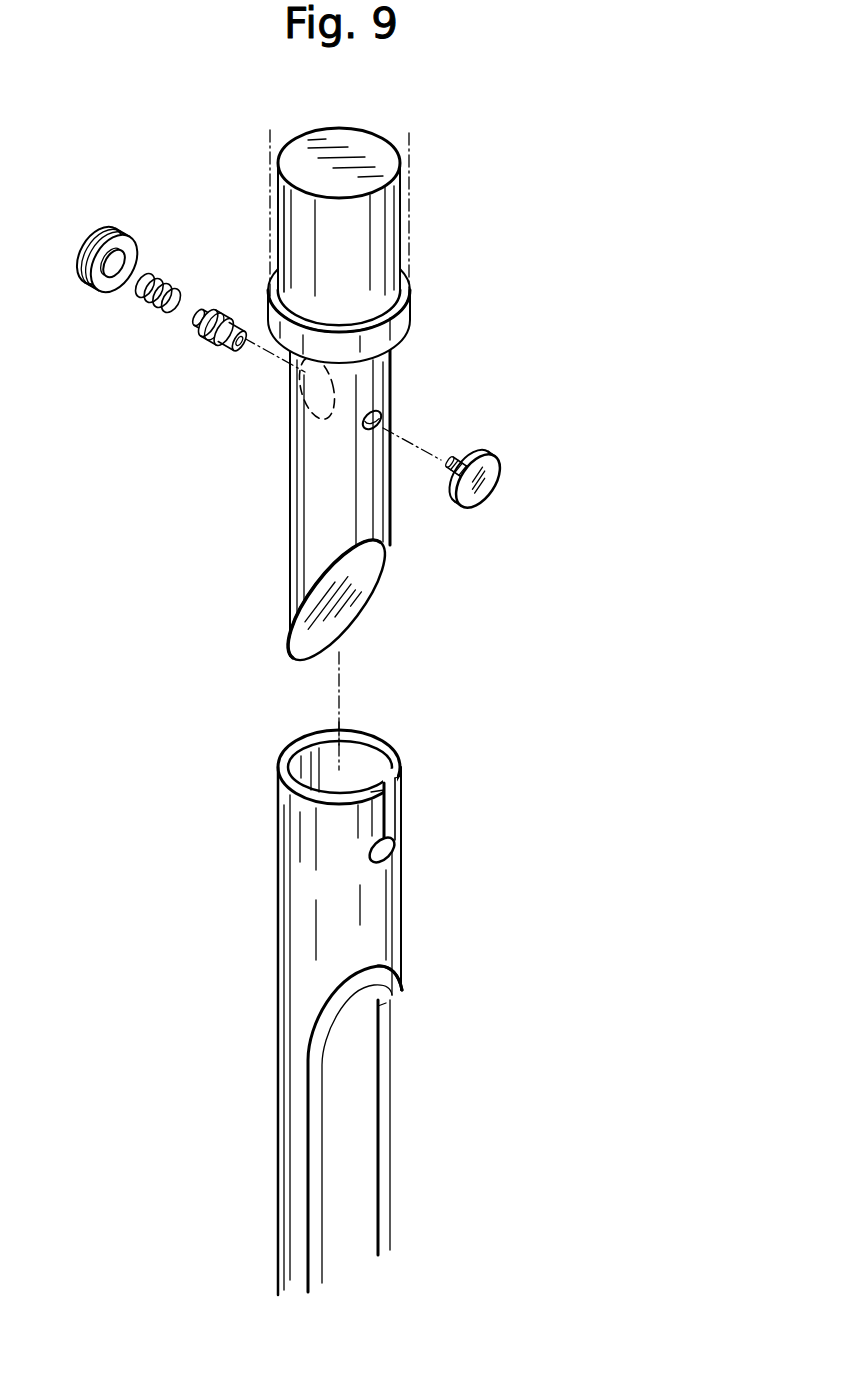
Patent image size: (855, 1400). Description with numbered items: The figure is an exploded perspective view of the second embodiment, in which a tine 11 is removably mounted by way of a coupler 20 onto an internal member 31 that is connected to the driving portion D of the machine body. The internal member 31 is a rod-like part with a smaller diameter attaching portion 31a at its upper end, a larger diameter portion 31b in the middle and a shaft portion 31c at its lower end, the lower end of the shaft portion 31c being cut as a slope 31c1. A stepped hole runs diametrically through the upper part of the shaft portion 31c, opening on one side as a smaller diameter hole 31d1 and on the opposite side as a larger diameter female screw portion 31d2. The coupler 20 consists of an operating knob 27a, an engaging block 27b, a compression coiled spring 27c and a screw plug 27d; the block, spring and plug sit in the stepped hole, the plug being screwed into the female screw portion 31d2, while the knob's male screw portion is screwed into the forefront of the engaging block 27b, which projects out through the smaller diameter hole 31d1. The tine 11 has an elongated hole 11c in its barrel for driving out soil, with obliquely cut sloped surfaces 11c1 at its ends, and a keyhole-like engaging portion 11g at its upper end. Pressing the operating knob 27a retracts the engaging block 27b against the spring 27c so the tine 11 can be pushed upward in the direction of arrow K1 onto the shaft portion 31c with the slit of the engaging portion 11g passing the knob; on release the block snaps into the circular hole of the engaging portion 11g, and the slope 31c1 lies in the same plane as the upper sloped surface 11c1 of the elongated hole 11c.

The tine 11 is at (345, 1008).
The elongated hole 11c is at (405, 1129).
The sloped surface 11c1 is at (390, 991).
The engaging portion 11g is at (372, 854).
The coupler 20 is at (510, 497).
The operating knob 27a is at (485, 488).
The engaging block 27b is at (205, 345).
The compression coiled spring 27c is at (156, 310).
The screw plug 27d is at (100, 288).
The internal member 31 is at (328, 502).
The attaching portion 31a is at (385, 232).
The larger diameter portion 31b is at (400, 320).
The shaft portion 31c is at (379, 502).
The slope 31c1 is at (362, 595).
The smaller diameter hole 31d1 is at (368, 431).
The larger diameter female screw portion 31d2 is at (300, 432).
The driving portion D is at (278, 222).
The arrow K1 is at (239, 830).